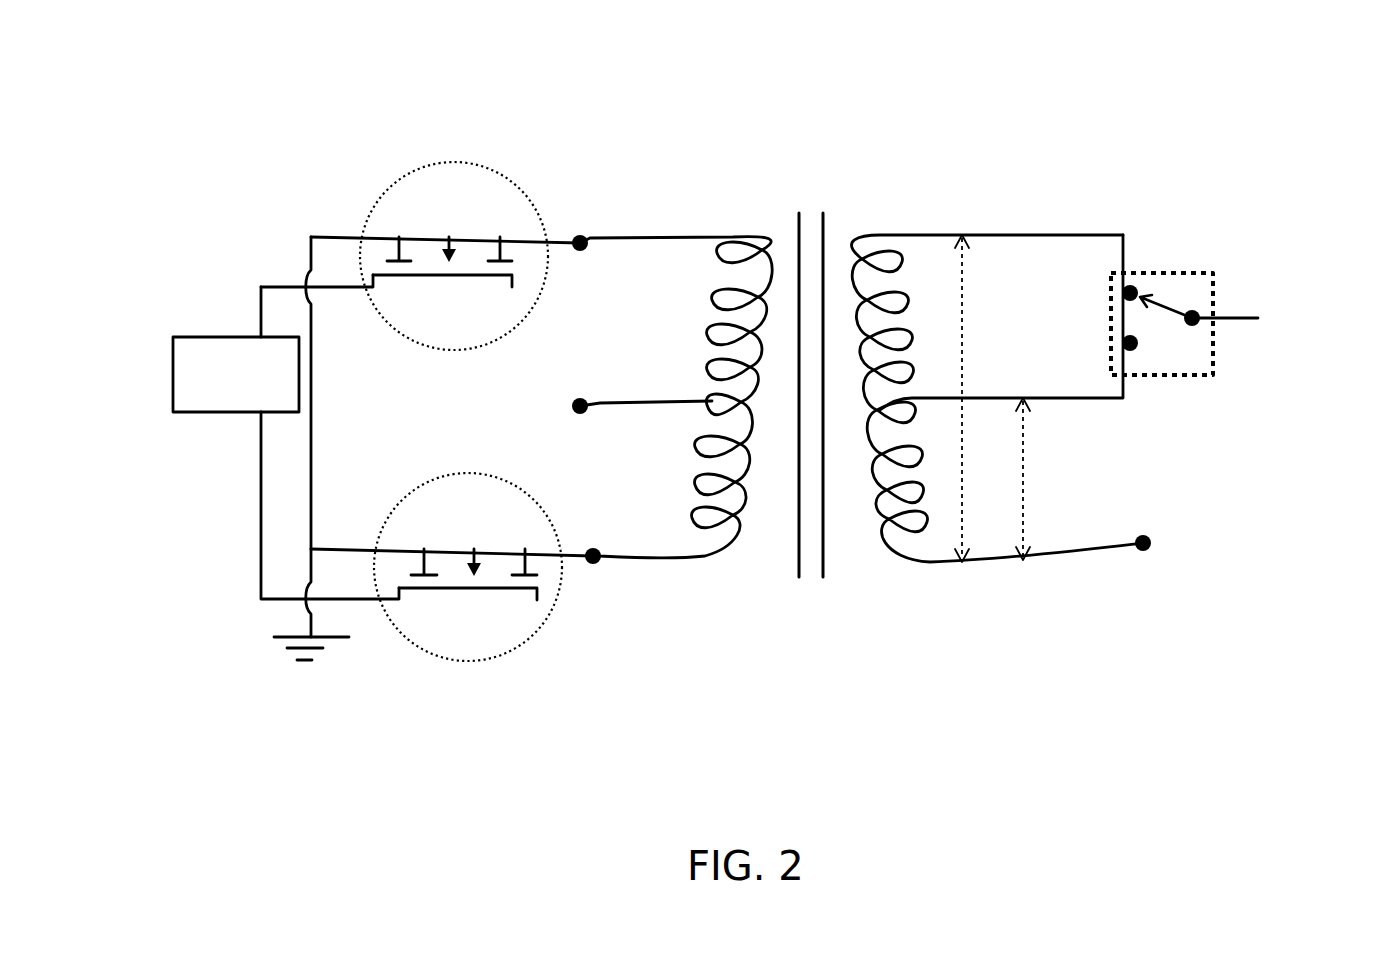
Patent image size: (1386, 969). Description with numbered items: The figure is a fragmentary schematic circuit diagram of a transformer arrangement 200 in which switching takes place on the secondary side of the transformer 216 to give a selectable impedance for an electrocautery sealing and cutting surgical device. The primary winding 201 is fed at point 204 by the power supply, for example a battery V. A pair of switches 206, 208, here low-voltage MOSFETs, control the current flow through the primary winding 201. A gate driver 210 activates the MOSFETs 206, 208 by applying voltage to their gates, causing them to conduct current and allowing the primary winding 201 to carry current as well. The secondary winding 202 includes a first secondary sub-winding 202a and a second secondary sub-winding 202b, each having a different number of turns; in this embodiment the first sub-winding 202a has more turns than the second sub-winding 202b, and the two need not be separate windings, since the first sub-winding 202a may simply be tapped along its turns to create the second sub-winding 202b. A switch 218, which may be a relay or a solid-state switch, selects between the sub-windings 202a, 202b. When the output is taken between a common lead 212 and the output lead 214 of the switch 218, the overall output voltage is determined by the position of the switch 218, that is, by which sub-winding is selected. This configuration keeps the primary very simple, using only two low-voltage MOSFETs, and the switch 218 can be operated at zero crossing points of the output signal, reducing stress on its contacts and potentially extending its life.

The resonant transformer circuit 200 is at (252, 176).
The primary winding 201 is at (753, 220).
The secondary winding 202 is at (855, 218).
The first secondary sub-winding 202a is at (1001, 398).
The second secondary sub-winding 202b is at (1062, 479).
The feed point 204 is at (583, 388).
The switch 206 is at (488, 182).
The switch 208 is at (490, 640).
The gate driver 210 is at (236, 374).
The common lead 212 is at (1258, 318).
The output lead 214 is at (1167, 320).
The transformer 216 is at (838, 607).
The switch 218 is at (1185, 285).